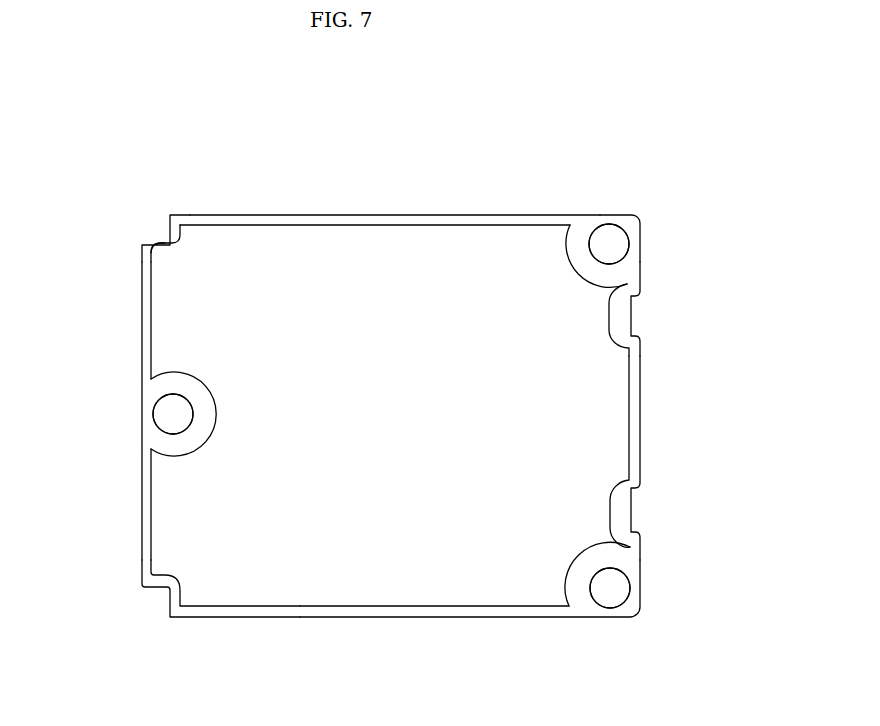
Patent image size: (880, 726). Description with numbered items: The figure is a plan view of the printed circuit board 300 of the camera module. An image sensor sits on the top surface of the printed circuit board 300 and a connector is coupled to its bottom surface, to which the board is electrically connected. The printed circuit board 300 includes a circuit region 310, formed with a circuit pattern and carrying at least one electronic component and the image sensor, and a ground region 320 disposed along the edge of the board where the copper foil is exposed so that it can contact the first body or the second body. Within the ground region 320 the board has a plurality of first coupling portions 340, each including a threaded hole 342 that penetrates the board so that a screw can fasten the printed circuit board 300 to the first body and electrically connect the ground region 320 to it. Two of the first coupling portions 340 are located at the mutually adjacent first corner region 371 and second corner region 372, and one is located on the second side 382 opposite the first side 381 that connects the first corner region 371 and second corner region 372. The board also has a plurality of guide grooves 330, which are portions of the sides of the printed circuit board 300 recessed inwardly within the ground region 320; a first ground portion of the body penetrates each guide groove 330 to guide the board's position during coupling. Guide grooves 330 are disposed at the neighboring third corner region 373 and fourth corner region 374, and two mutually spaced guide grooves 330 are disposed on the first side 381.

The printed circuit board 300 is at (163, 89).
The circuit region 310 is at (366, 270).
The ground region 320 is at (482, 215).
The guide groove 330 is at (150, 231).
The first coupling portion 340 is at (603, 215).
The threaded hole 342 is at (613, 249).
The first corner region 371 is at (629, 217).
The second corner region 372 is at (637, 607).
The third corner region 373 is at (150, 218).
The fourth corner region 374 is at (143, 607).
The first side 381 is at (637, 418).
The second side 382 is at (146, 527).